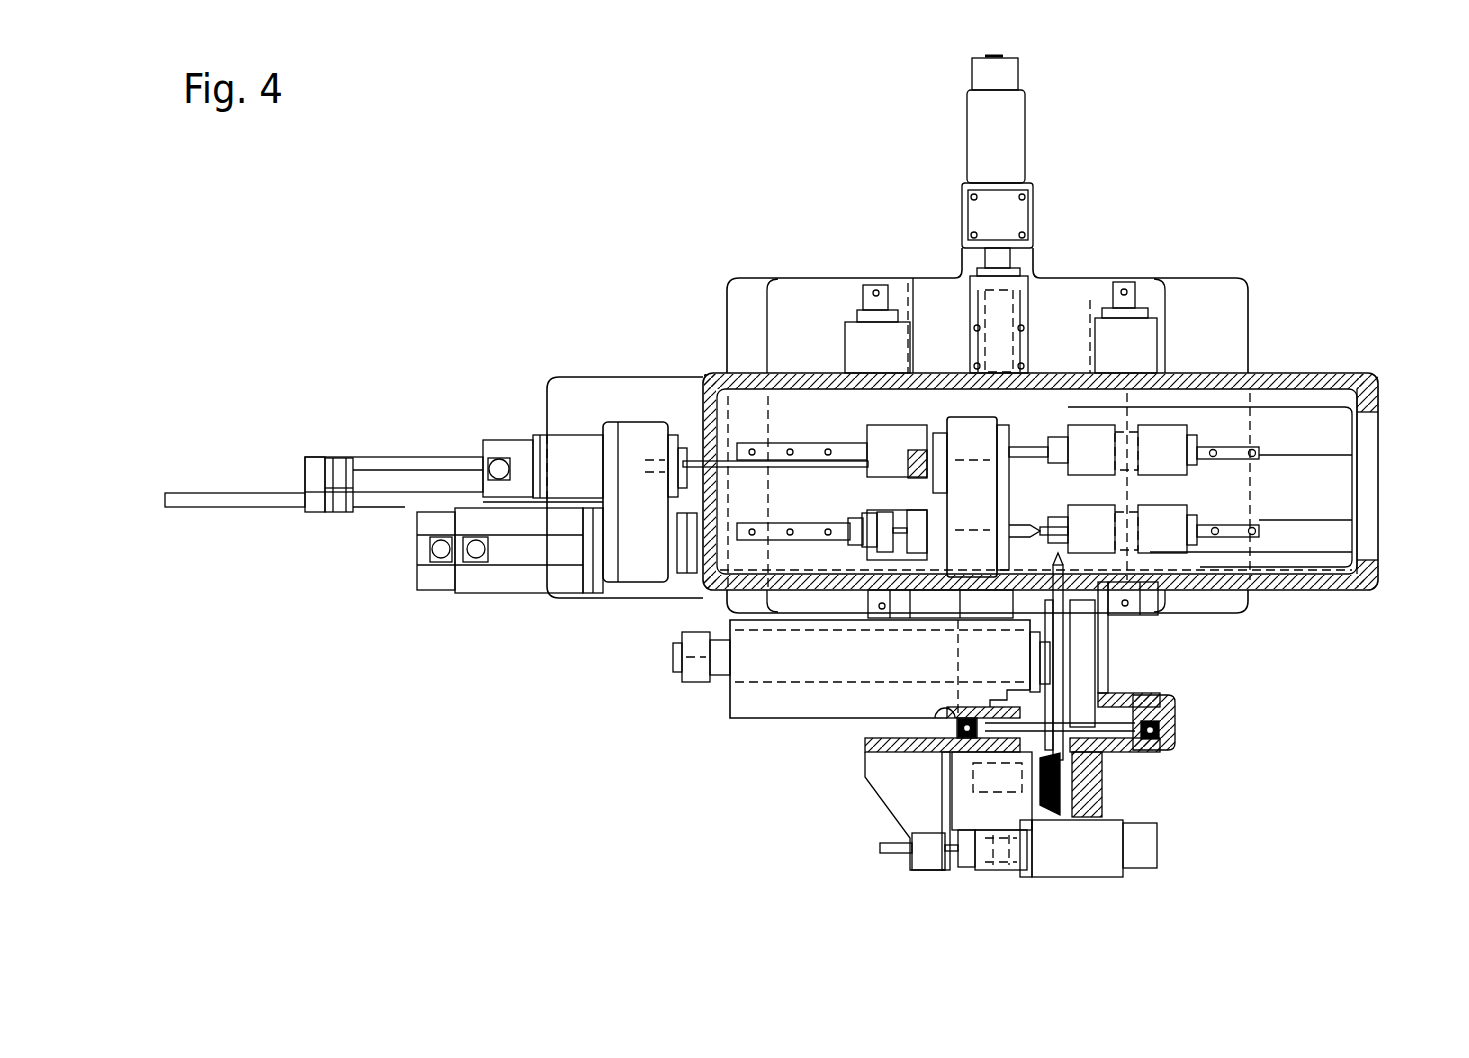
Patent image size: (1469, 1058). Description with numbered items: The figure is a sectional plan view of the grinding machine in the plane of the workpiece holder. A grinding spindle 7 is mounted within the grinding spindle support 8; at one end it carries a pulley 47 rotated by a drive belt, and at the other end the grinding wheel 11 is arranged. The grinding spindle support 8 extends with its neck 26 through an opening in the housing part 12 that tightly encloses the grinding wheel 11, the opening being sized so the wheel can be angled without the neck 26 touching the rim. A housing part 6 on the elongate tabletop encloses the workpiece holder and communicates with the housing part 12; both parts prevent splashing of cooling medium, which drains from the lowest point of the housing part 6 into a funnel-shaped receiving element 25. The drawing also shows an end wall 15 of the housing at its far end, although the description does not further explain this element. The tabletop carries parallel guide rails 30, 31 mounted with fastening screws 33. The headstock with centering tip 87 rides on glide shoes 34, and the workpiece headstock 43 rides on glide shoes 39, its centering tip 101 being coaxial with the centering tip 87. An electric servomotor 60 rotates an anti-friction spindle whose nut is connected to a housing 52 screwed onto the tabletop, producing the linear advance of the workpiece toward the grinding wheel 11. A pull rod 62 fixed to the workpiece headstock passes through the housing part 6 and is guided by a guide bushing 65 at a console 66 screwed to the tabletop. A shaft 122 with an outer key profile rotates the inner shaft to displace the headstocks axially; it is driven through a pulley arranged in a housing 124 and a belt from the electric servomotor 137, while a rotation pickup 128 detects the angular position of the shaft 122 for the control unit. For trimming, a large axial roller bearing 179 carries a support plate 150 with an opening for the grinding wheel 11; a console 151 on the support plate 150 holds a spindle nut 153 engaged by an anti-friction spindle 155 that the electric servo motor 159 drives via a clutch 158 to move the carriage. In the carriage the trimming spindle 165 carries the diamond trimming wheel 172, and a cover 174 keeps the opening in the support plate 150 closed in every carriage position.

The housing part 6 is at (1366, 585).
The grinding spindle 7 is at (1028, 644).
The grinding spindle support 8 is at (798, 710).
The grinding wheel 11 is at (1062, 690).
The housing part 12 is at (942, 708).
The end wall 15 is at (1372, 470).
The funnel-shaped receiving element 25 is at (1140, 310).
The neck 26 is at (858, 318).
The guide rail 30 is at (1260, 452).
The guide rail 31 is at (1262, 532).
The fastening screws 33 is at (1215, 452).
The glide shoes 34 is at (1085, 425).
The glide shoes 39 is at (870, 430).
The workpiece headstock 43 is at (968, 570).
The pulley 47 is at (696, 684).
The housing 52 is at (968, 292).
The electric servomotor 60 is at (1013, 120).
The pull rod 62 is at (405, 500).
The guide bushing 65 is at (340, 512).
The console 66 is at (385, 457).
The centering tip 87 is at (1085, 530).
The centering tip 101 is at (1020, 528).
The shaft 122 is at (810, 468).
The housing 124 is at (640, 582).
The rotation pickup 128 is at (506, 440).
The electric servomotor 137 is at (500, 593).
The support plate 150 is at (1130, 752).
The console 151 is at (880, 775).
The spindle nut 153 is at (932, 868).
The anti-friction spindle 155 is at (896, 855).
The clutch 158 is at (992, 870).
The electric servo motor 159 is at (1115, 870).
The trimming spindle 165 is at (960, 772).
The diamond trimming wheel 172 is at (1065, 820).
The cover 174 is at (1100, 787).
The axial roller bearing 179 is at (1165, 728).